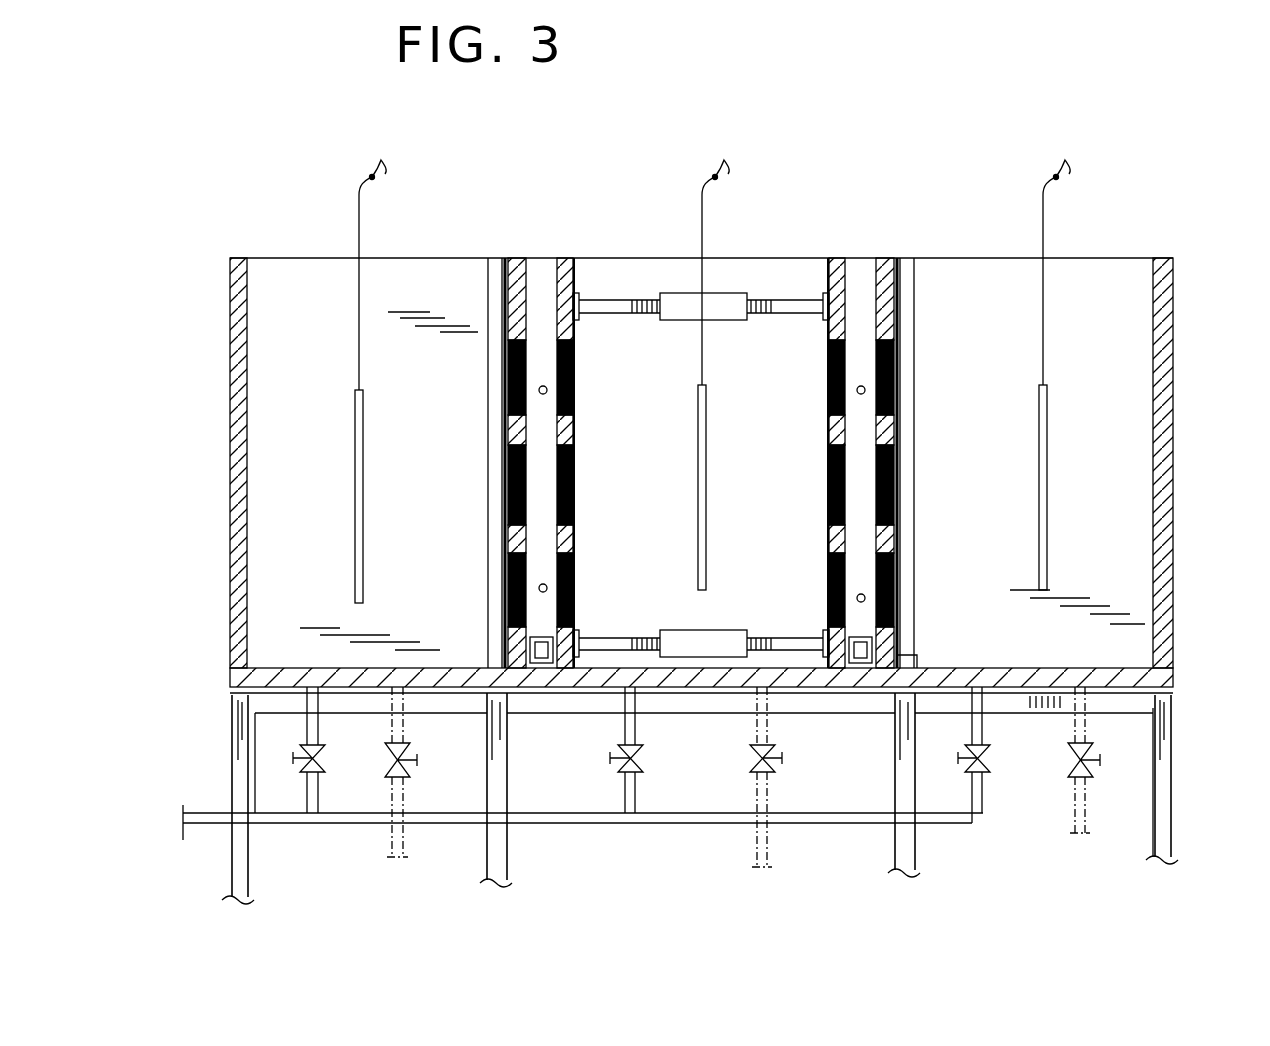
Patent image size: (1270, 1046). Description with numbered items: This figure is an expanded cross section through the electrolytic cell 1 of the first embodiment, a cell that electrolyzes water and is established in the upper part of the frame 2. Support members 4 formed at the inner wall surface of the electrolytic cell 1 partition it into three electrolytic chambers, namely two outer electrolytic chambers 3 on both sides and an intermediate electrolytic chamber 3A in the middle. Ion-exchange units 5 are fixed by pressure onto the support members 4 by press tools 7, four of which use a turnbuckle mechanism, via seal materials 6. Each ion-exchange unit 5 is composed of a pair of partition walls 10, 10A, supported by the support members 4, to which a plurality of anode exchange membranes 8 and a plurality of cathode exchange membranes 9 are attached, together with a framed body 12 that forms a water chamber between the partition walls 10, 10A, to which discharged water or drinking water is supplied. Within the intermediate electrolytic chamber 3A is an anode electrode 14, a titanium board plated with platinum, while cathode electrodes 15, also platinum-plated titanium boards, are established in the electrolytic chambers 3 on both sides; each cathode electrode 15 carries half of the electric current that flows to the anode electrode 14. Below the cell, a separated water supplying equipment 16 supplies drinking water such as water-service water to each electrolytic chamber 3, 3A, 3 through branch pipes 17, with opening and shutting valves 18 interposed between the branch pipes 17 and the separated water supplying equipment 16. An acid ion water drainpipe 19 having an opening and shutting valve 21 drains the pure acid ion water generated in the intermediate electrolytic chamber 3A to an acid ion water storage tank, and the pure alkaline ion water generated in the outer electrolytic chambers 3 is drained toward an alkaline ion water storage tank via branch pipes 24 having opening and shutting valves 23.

The electrolytic cell 1 is at (1176, 368).
The frame 2 is at (1175, 780).
The electrolytic chamber 3 is at (288, 401).
The intermediate electrolytic chamber 3A is at (660, 498).
The support member 4 is at (486, 276).
The ion-exchange unit 5 is at (827, 272).
The seal material 6 is at (918, 626).
The press tool 7 is at (672, 292).
The anode exchange membrane 8 is at (510, 392).
The cathode exchange membrane 9 is at (510, 472).
The partition wall 10 is at (518, 262).
The partition wall 10A is at (563, 262).
The framed body 12 is at (540, 668).
The anode electrode 14 is at (706, 466).
The cathode electrode 15 is at (355, 488).
The separated water supplying equipment 16 is at (205, 813).
The branch pipe 17 is at (319, 732).
The opening and shutting valve 18 is at (322, 775).
The acid ion water drainpipe 19 is at (755, 822).
The opening and shutting valve 21 is at (772, 760).
The opening and shutting valve 23 is at (410, 745).
The branch pipe 24 is at (405, 843).